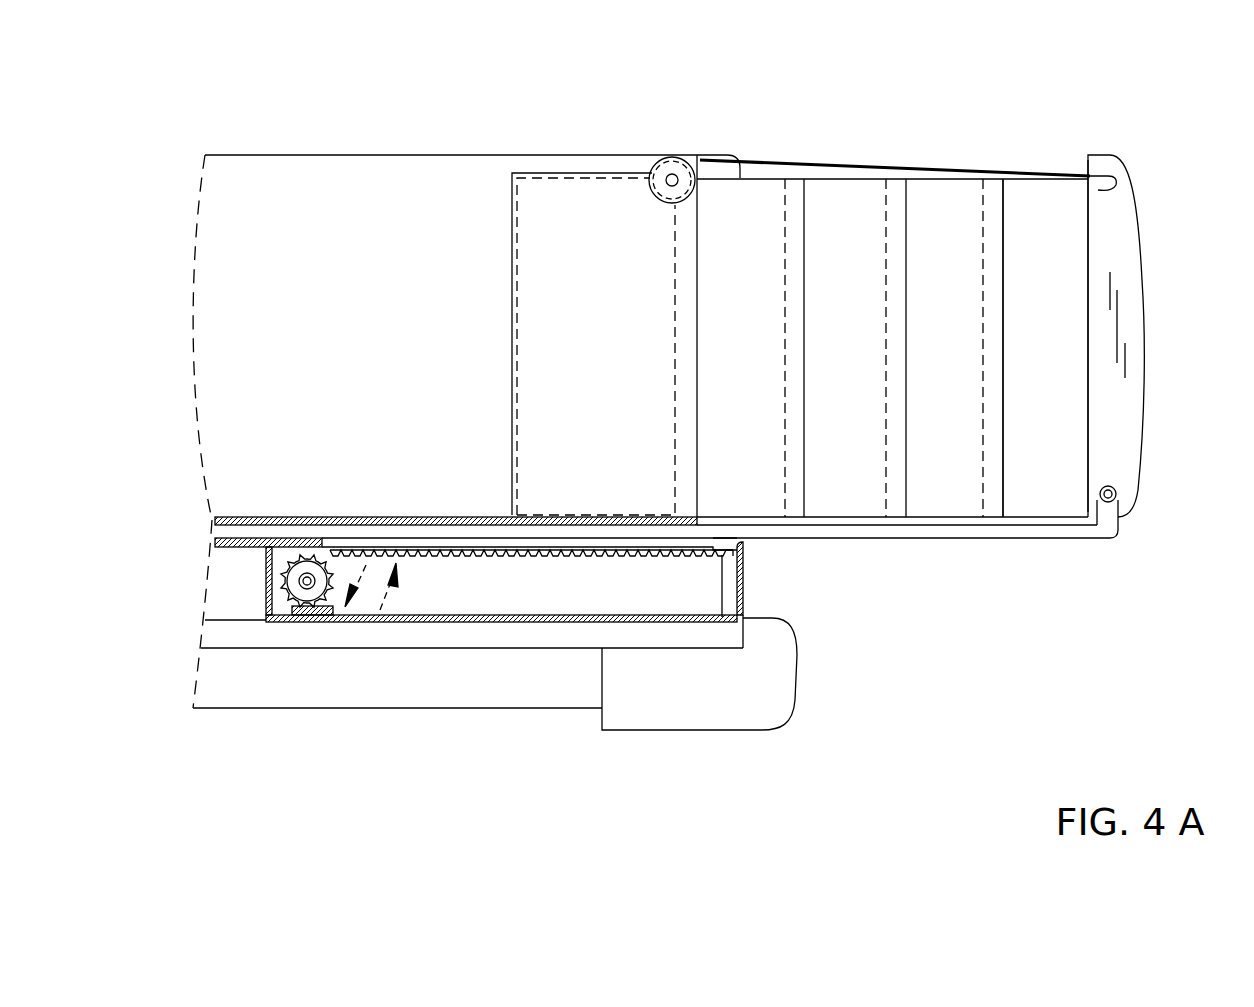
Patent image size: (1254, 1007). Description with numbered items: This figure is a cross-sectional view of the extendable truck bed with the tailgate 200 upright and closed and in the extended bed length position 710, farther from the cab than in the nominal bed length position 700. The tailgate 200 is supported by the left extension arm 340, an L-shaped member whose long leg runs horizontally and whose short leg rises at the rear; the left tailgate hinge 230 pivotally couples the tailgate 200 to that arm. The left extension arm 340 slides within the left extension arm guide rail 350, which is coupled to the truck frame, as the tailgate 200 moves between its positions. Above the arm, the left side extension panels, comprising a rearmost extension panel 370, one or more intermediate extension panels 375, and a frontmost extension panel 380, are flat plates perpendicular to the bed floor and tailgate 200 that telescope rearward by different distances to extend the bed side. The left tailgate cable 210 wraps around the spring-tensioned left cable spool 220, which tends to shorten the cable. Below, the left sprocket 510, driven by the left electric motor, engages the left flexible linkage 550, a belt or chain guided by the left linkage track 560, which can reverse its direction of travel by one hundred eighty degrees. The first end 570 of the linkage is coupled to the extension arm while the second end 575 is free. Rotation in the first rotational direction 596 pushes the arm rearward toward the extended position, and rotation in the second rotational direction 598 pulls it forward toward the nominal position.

The nominal bed length position 700 is at (710, 118).
The extended bed length position 710 is at (1110, 118).
The left cable spool 220 is at (655, 168).
The left tailgate cable 210 is at (790, 162).
The tailgate 200 is at (1135, 365).
The left tailgate hinge 230 is at (1120, 490).
The left extension arm 340 is at (417, 530).
The left extension arm guide rail 350 is at (215, 540).
The rearmost extension panel 370 is at (1025, 498).
The intermediate extension panels 375 is at (848, 498).
The frontmost extension panel 380 is at (755, 495).
The left sprocket 510 is at (303, 595).
The left flexible linkage 550 is at (520, 557).
The left linkage track 560 is at (267, 603).
The first end 570 is at (725, 615).
The second end 575 is at (350, 617).
The first rotational direction 596 is at (367, 560).
The second rotational direction 598 is at (398, 603).